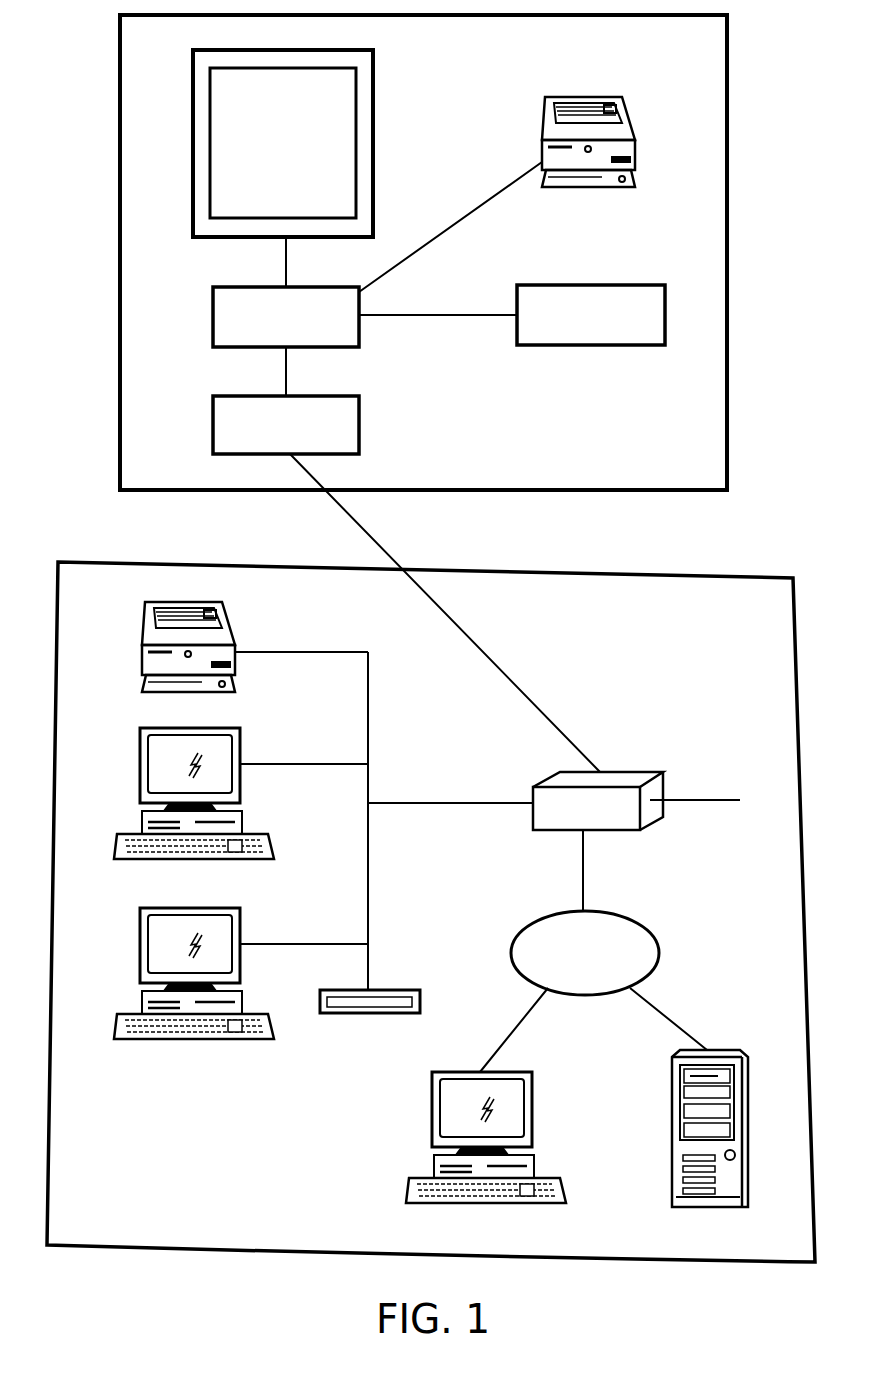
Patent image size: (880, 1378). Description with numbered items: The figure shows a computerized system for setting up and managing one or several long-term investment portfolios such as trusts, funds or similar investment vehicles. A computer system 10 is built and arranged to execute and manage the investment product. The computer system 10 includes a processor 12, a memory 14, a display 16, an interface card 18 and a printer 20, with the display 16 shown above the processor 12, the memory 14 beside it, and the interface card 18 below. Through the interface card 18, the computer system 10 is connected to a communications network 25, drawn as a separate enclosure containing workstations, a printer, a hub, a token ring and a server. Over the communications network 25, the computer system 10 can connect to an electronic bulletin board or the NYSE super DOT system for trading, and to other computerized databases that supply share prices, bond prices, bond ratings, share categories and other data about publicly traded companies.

The computer system 10 is at (662, 490).
The processor 12 is at (213, 318).
The memory 14 is at (600, 285).
The display 16 is at (193, 108).
The interface card 18 is at (213, 426).
The printer 20 is at (542, 118).
The communications network 25 is at (747, 563).